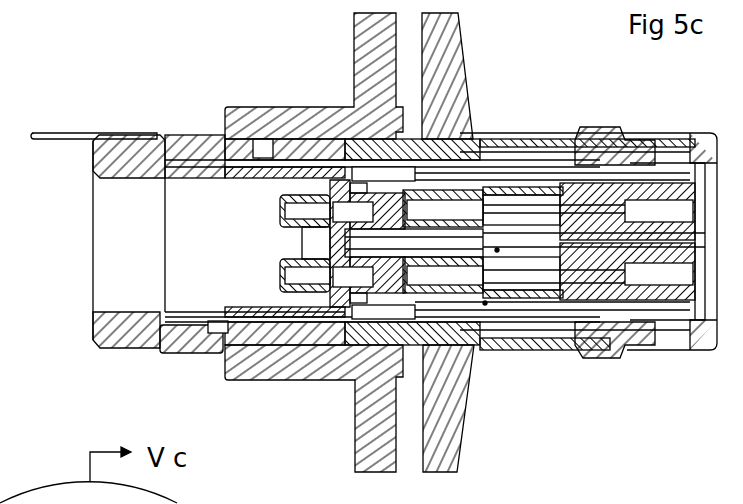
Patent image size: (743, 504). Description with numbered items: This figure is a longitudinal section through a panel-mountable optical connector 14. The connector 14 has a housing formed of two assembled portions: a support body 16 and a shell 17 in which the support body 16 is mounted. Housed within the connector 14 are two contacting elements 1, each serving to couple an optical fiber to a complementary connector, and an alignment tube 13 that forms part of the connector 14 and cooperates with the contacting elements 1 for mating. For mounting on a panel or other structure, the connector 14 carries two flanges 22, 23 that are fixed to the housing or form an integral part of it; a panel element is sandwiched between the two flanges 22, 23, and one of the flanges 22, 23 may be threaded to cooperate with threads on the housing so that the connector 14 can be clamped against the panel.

The contacting element 1 is at (497, 252).
The alignment tube 13 is at (657, 230).
The connector 14 is at (222, 57).
The support body 16 is at (477, 173).
The shell 17 is at (573, 165).
The flange 22 is at (438, 42).
The flange 23 is at (358, 35).